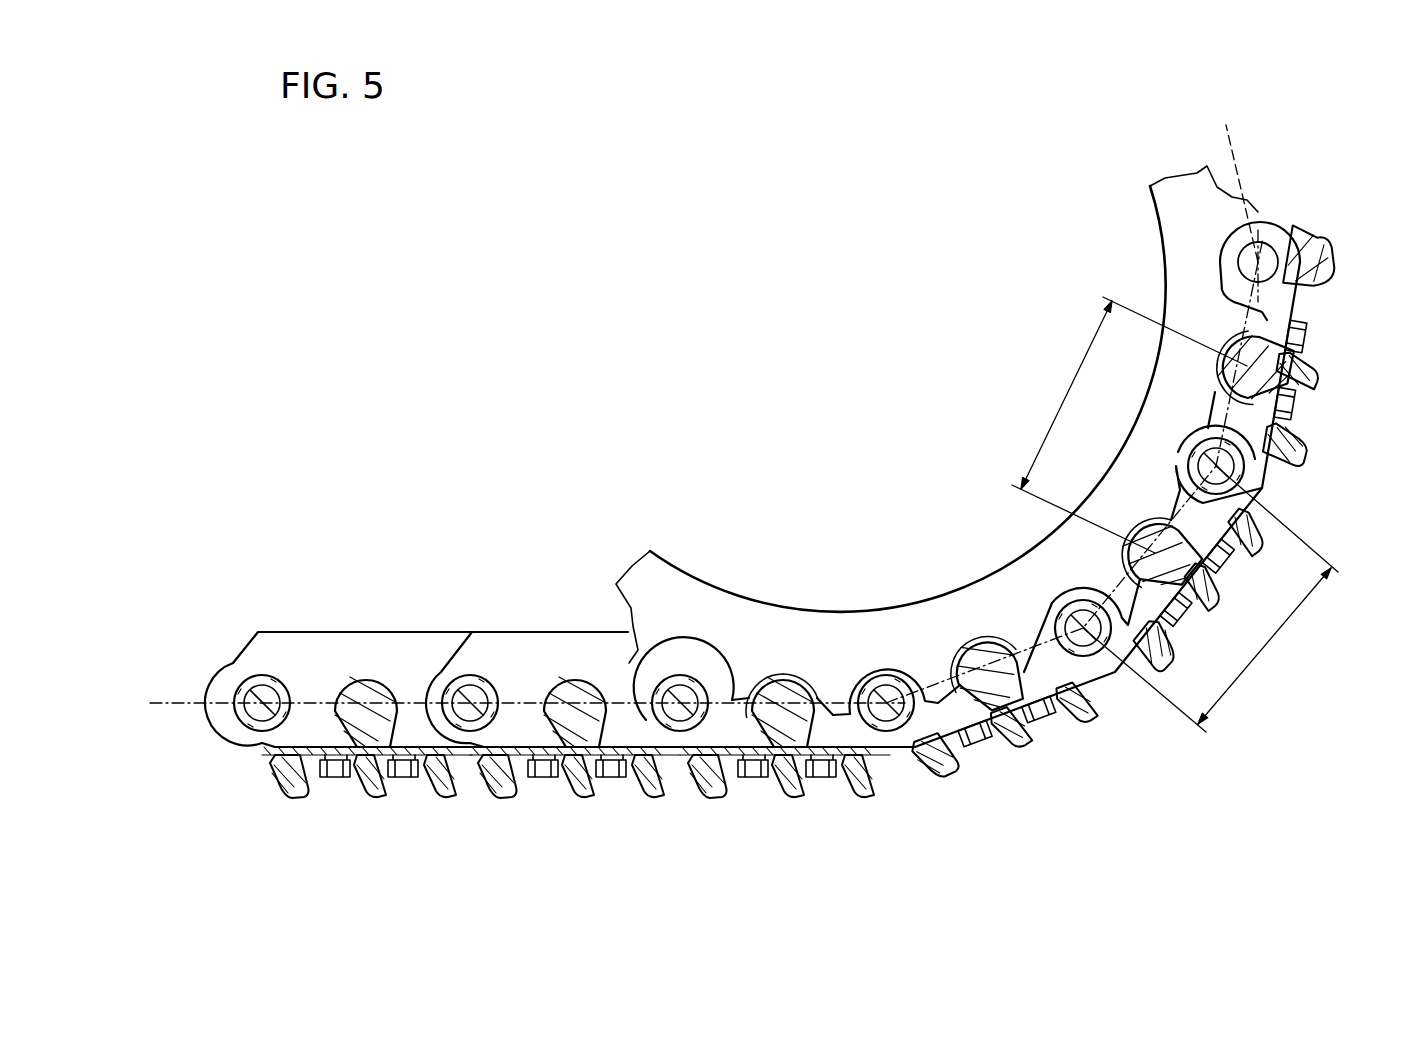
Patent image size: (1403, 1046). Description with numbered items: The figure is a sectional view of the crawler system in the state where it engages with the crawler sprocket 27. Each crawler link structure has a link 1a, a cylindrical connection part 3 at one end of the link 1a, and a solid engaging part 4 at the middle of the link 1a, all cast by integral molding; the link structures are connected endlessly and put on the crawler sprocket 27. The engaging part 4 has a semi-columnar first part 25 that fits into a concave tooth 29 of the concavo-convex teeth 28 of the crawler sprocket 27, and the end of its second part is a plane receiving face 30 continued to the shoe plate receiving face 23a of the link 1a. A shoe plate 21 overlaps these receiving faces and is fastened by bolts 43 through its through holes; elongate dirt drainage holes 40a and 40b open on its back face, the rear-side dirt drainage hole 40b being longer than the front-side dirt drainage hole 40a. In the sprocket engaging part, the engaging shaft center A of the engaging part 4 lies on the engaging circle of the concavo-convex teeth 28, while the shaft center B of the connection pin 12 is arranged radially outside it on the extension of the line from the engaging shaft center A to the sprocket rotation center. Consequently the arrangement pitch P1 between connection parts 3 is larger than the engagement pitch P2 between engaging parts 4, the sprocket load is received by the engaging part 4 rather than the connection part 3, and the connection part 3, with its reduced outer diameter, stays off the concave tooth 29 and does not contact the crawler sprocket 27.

The crawler sprocket 27 is at (690, 545).
The link 1a is at (316, 630).
The connection part 3 is at (256, 682).
The connection pin 12 is at (478, 688).
The concavo-convex teeth 28 is at (1262, 252).
The engaging part 4 is at (360, 680).
The first part 25 is at (380, 683).
The concave tooth 29 is at (770, 665).
The shoe plate 21 is at (292, 808).
The bolt 43 is at (338, 790).
The receiving face 30 is at (383, 797).
The shoe plate receiving face 23a is at (445, 800).
The dirt drainage hole 40a is at (540, 790).
The dirt drainage hole 40b is at (612, 790).
The engaging shaft center A is at (1154, 552).
The shaft center B is at (1085, 625).
The arrangement pitch P1 is at (1210, 599).
The engagement pitch P2 is at (1129, 425).